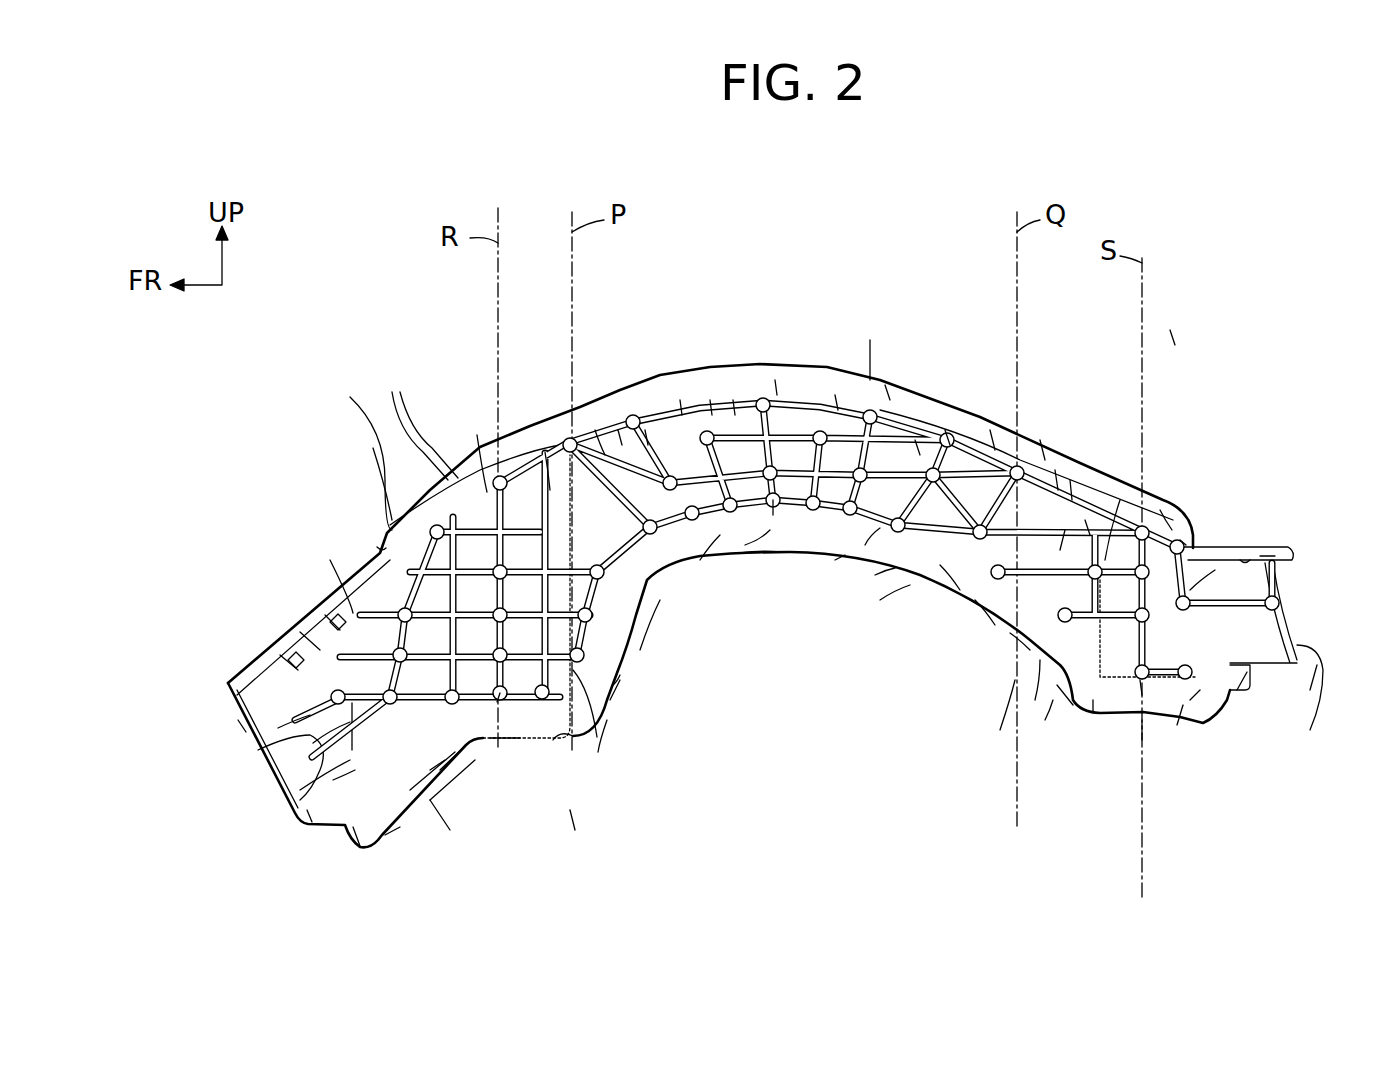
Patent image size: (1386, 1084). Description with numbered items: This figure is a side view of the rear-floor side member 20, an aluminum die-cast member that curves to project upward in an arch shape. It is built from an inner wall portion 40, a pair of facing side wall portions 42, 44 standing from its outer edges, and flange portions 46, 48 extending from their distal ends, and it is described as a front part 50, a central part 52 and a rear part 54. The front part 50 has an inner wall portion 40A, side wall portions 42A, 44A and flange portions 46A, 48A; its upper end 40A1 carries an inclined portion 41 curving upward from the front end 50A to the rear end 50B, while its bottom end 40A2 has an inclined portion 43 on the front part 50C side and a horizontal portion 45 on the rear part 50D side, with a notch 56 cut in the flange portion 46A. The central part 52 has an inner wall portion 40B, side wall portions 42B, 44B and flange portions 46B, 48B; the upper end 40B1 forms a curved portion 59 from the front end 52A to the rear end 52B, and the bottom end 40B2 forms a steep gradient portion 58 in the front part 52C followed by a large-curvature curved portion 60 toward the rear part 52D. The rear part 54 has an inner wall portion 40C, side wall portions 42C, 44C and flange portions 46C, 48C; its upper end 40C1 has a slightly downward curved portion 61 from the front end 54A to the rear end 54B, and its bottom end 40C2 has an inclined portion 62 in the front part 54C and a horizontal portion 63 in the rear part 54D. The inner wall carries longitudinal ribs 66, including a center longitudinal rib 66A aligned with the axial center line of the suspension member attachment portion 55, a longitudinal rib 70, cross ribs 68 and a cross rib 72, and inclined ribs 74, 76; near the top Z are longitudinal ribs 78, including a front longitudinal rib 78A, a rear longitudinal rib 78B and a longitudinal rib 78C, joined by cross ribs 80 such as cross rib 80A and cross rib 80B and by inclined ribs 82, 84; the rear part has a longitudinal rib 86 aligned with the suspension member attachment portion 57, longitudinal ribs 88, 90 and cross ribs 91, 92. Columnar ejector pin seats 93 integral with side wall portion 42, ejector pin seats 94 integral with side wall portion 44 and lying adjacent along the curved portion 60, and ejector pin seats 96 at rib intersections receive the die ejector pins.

The rear-floor side member 20 is at (1114, 212).
The inner wall portion 40 is at (793, 395).
The rear-floor side member front part 50 is at (420, 356).
The ejector pin seats 94 is at (460, 702).
The ejector pin seats 96 is at (403, 618).
The longitudinal rib 66A is at (477, 435).
The front end 52A is at (547, 452).
The cross ribs 68 is at (416, 421).
The longitudinal ribs 66 is at (355, 455).
The flange portion 46A is at (373, 448).
The longitudinal rib 70 is at (330, 560).
The notch 56 is at (377, 547).
The upper end 40A1 is at (330, 620).
The inclined portion 41 is at (310, 640).
The side wall portion 42A is at (290, 660).
The front end 50A is at (238, 720).
The inclined rib 76 is at (278, 728).
The inner wall portion 40A is at (313, 743).
The inclined rib 74 is at (333, 780).
The cross rib 72 is at (307, 810).
The inclined portion 43 is at (353, 827).
The side wall portion 44A is at (400, 827).
The flange portion 48A is at (440, 770).
The front part 50C is at (450, 830).
The suspension member attachment portion 55 is at (497, 704).
The rear part 50D is at (513, 742).
The bottom end 40A2 is at (430, 772).
The horizontal portion 45 is at (553, 742).
The front part 52C is at (598, 754).
The rear end 50B is at (575, 830).
The bottom end 40B2 is at (620, 682).
The steep gradient portion 58 is at (615, 687).
The inner wall portion 40B is at (640, 652).
The flange portion 48 is at (700, 562).
The longitudinal ribs 78 is at (775, 517).
The side wall portion 44 is at (752, 522).
The side wall portion 44B is at (835, 562).
The longitudinal rib 78A is at (745, 547).
The longitudinal rib 78B is at (865, 547).
The curved portion 60 is at (875, 577).
The flange portion 48B is at (940, 567).
The cross rib 80B is at (880, 602).
The rear part 52D is at (975, 602).
The front end 54A is at (1010, 635).
The inclined portion 62 is at (1035, 702).
The front part 54C is at (1045, 722).
The side wall portion 44C is at (1000, 732).
The inner wall portion 40C is at (1057, 687).
The horizontal portion 63 is at (1093, 702).
The suspension member attachment portion 57 is at (1140, 682).
The bottom end 40C2 is at (1142, 742).
The rear part 54D is at (1177, 727).
The flange portion 48C is at (1190, 702).
The cross rib 91 is at (1237, 692).
The rear end 54B is at (1317, 667).
The curved portion 61 is at (1085, 518).
The longitudinal rib 88 is at (1065, 528).
The side wall portion 42C is at (1120, 498).
The ejector pin seats 93 is at (1180, 538).
The longitudinal rib 86 is at (1190, 588).
The longitudinal rib 90 is at (1240, 558).
The flange portion 46C is at (1160, 508).
The rear-floor side member rear part 54 is at (1166, 334).
The upper end 40C1 is at (1070, 478).
The cross ribs 92 is at (1055, 468).
The rear end 52B is at (1040, 438).
The inclined rib 84 is at (990, 428).
The cross rib 80A is at (945, 428).
The flange portion 46B is at (915, 438).
The rear-floor side member central part 52 is at (870, 344).
The cross ribs 80 is at (885, 383).
The side wall portion 42B is at (835, 393).
The top Z is at (775, 378).
The side wall portion 42 is at (733, 398).
The flange portion 46 is at (680, 398).
The curved portion 59 is at (710, 398).
The longitudinal rib 78C is at (595, 428).
The upper end 40B1 is at (618, 428).
The inclined rib 82 is at (645, 428).